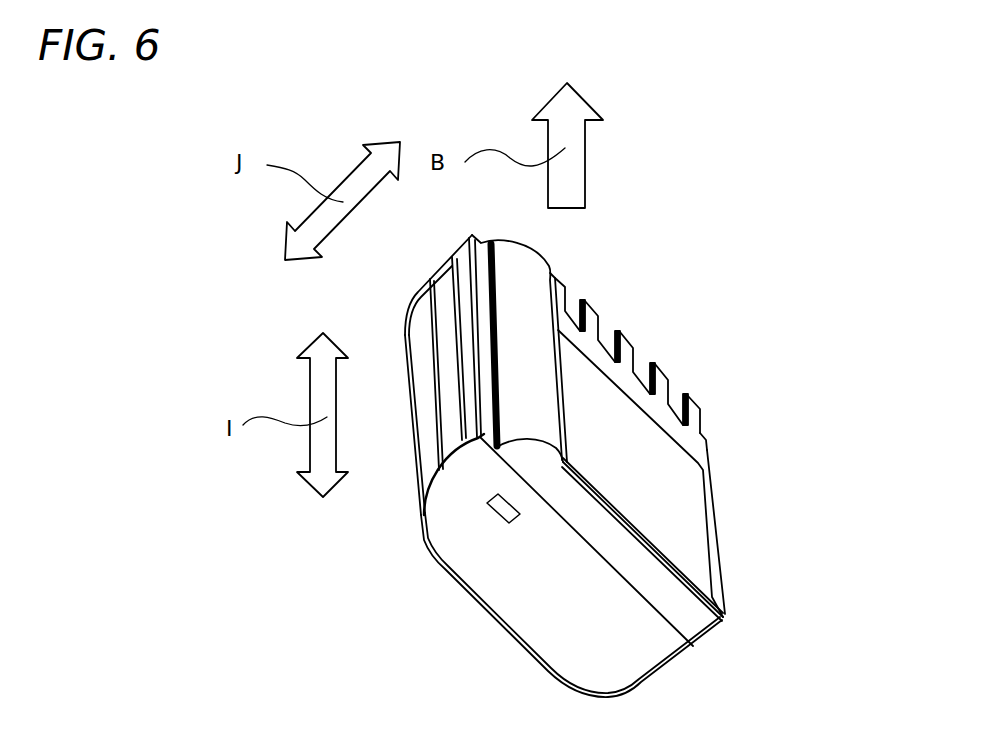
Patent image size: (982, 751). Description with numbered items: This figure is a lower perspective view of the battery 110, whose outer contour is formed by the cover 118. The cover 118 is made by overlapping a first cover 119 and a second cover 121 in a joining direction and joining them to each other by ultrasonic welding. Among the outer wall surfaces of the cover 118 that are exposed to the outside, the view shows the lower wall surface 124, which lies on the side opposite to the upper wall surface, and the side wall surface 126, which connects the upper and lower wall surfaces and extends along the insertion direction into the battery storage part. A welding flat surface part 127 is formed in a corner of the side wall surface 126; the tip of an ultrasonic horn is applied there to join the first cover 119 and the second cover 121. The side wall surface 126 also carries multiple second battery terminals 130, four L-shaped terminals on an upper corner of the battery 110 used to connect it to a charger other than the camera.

The battery 110 is at (732, 293).
The cover 118 is at (602, 484).
The first cover 119 is at (412, 572).
The second cover 121 is at (734, 397).
The lower wall surface 124 is at (541, 580).
The side wall surface 126 is at (648, 478).
The welding flat surface part 127 is at (481, 322).
The second battery terminals 130 is at (677, 403).